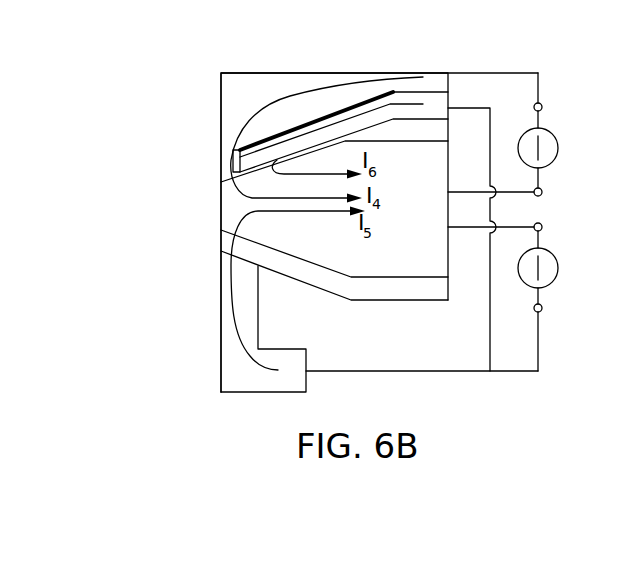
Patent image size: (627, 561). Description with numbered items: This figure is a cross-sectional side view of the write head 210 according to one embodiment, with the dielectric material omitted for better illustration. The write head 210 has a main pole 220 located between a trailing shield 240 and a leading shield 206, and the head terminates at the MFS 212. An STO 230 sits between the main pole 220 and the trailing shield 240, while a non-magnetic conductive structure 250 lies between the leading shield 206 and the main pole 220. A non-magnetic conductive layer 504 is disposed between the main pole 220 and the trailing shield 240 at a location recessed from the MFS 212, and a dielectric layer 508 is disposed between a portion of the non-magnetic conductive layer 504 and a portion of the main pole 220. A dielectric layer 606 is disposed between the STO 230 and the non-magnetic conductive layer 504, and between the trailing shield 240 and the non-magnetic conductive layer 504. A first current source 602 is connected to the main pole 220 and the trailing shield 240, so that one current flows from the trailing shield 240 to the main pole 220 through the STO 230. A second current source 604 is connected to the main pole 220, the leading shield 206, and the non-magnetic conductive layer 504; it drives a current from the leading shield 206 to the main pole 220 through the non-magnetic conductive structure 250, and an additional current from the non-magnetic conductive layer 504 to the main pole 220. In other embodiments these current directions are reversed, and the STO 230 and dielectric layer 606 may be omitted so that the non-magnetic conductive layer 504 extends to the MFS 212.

The write head 210 is at (173, 57).
The MFS 212 is at (221, 100).
The trailing shield 240 is at (291, 82).
The dielectric layer 508 is at (392, 130).
The non-magnetic conductive layer 504 is at (438, 98).
The dielectric layer 606 is at (233, 152).
The STO 230 is at (233, 172).
The main pole 220 is at (236, 211).
The non-magnetic conductive structure 250 is at (246, 247).
The leading shield 206 is at (235, 363).
The first current source 602 is at (552, 134).
The second current source 604 is at (552, 254).